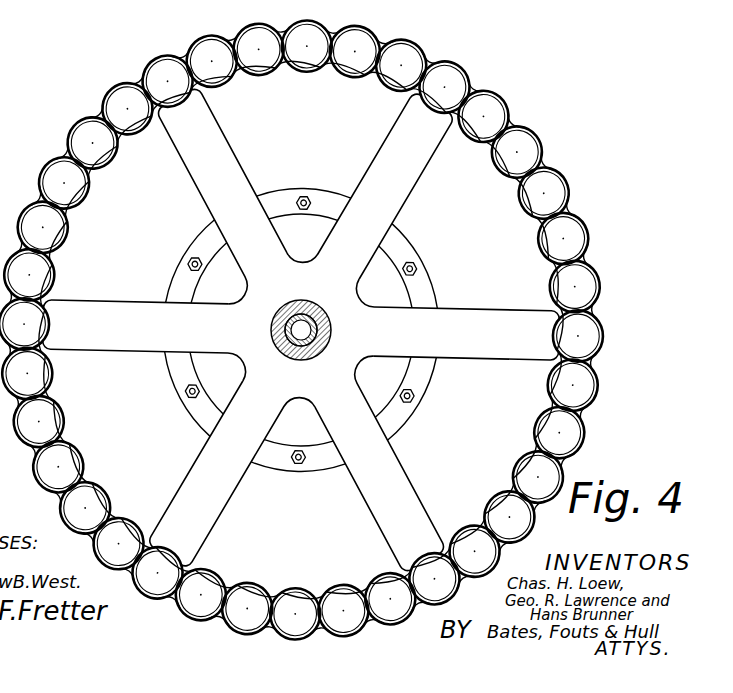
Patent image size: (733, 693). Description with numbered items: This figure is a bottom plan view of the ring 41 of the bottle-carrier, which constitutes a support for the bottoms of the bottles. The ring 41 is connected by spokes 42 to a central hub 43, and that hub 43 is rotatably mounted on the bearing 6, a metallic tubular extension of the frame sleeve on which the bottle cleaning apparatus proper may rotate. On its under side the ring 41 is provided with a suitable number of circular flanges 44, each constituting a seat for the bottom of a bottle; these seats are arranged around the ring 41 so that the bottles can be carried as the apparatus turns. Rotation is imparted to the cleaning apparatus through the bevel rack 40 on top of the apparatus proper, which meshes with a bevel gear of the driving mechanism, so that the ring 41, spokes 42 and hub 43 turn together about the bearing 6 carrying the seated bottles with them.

The bevel rack 40 is at (409, 397).
The ring 41 is at (549, 164).
The spokes 42 is at (393, 197).
The central hub 43 is at (331, 330).
The circular flanges 44 is at (585, 228).
The tubular extension 6 is at (292, 352).